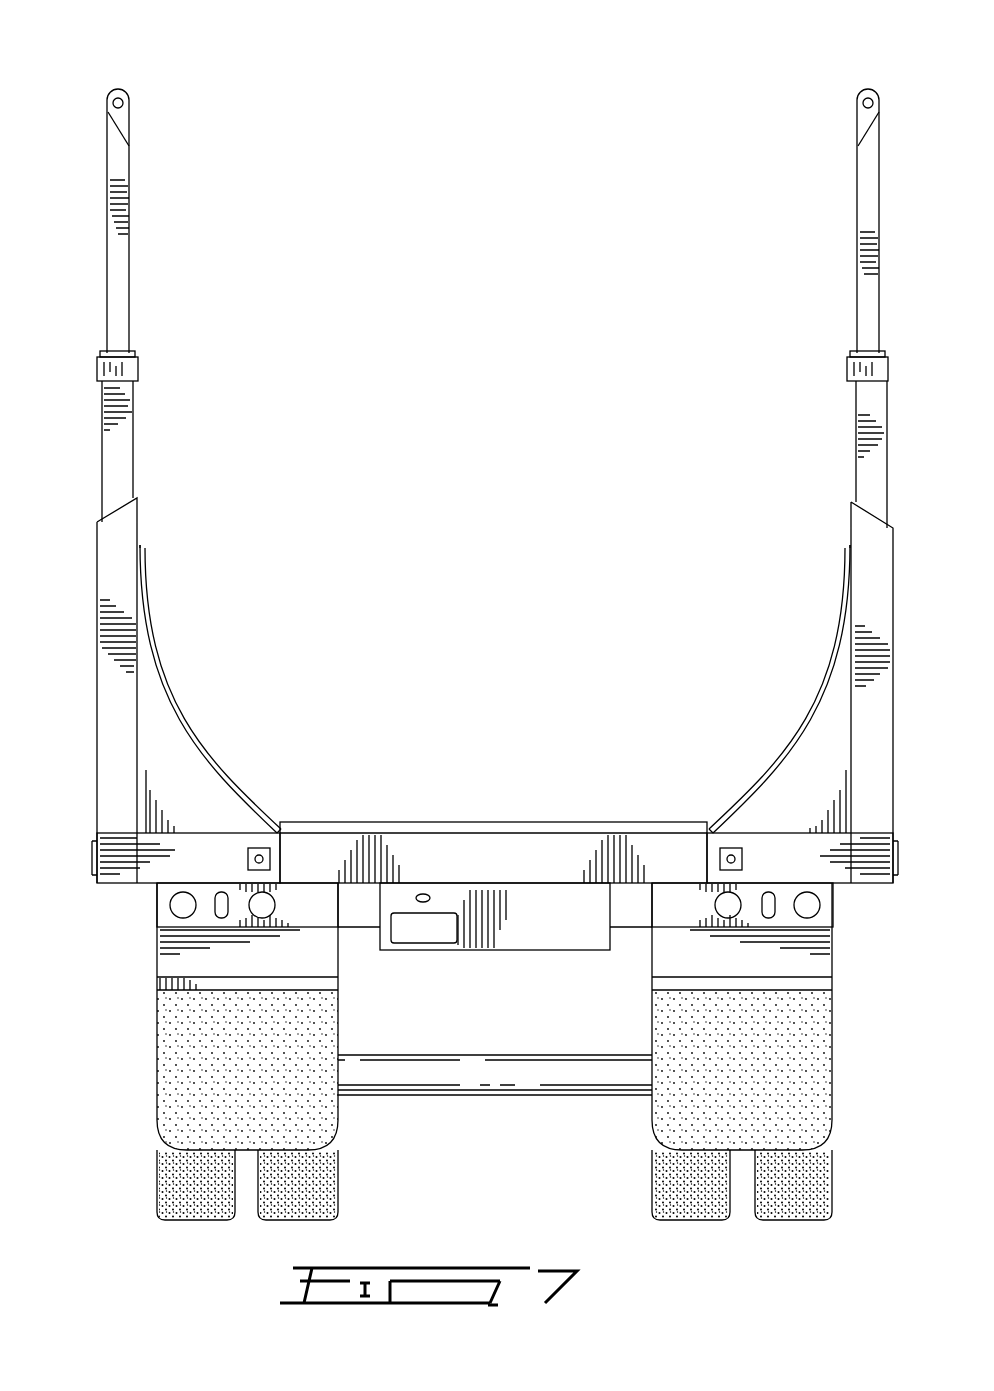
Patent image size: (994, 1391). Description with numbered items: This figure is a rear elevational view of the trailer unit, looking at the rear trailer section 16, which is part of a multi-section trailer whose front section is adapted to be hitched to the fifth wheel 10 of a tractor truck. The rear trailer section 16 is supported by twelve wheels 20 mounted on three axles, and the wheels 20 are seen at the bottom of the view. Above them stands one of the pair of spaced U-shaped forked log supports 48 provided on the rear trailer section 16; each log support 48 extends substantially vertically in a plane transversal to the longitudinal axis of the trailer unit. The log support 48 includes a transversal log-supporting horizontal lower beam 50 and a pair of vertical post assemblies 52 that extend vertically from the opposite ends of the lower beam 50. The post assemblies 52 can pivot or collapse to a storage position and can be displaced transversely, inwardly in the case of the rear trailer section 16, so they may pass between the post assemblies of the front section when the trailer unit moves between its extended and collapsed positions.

The fifth wheel 10 is at (487, 68).
The rear trailer section 16 is at (94, 681).
The wheels 20 is at (166, 1196).
The U-shaped forked log support 48 is at (130, 232).
The horizontal lower beam 50 is at (400, 833).
The vertical post assembly 52 is at (137, 410).